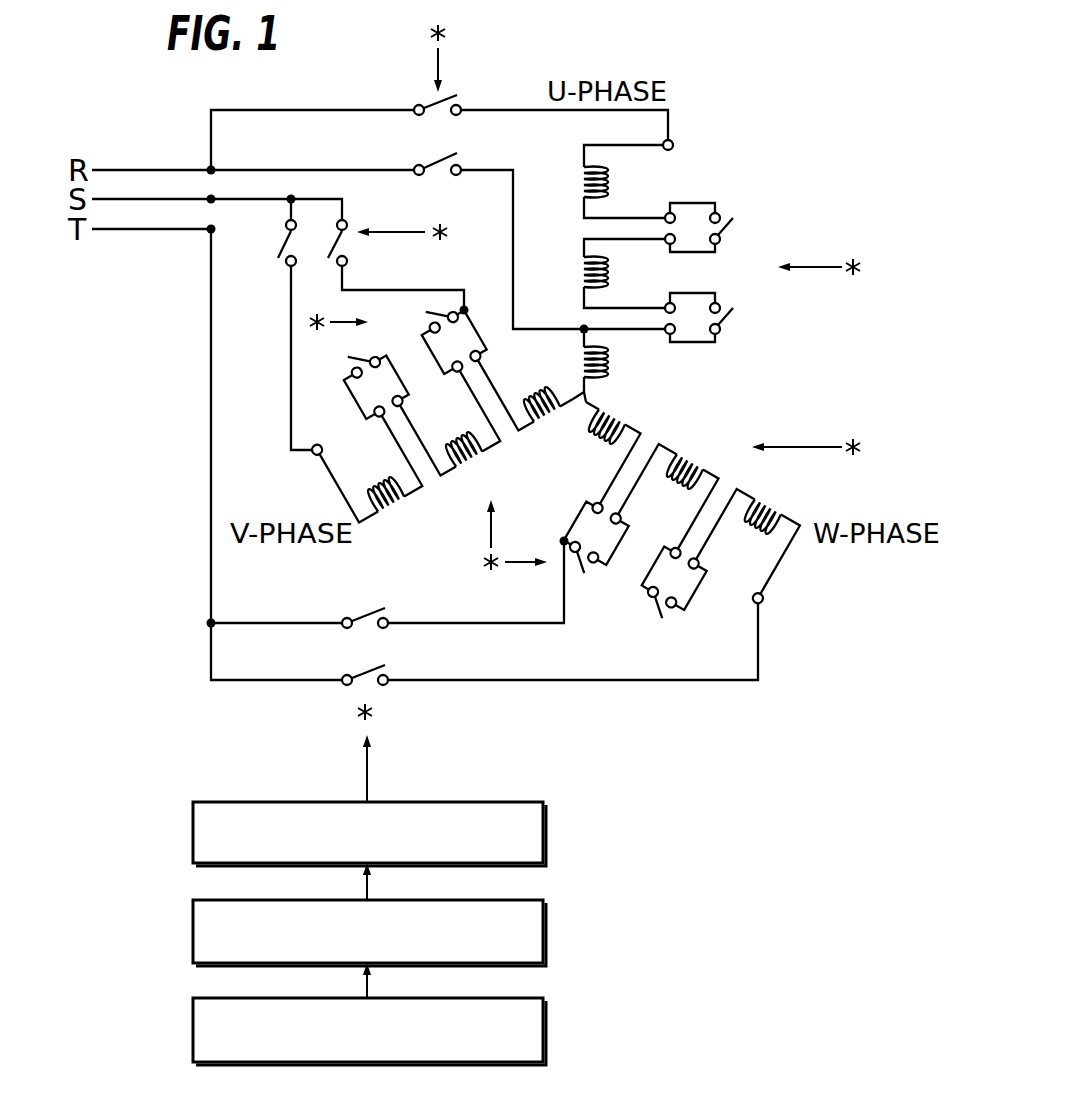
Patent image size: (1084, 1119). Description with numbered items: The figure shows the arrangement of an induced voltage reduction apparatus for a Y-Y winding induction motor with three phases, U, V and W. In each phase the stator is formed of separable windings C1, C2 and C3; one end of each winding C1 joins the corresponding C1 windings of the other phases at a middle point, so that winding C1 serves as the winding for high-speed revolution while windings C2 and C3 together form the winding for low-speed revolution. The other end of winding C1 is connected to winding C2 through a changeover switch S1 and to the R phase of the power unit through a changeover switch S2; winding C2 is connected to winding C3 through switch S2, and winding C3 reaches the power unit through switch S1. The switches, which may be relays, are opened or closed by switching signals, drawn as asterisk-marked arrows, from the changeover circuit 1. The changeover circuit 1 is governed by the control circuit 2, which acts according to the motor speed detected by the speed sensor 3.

The changeover circuit 1 is at (369, 834).
The control circuit 2 is at (369, 933).
The speed sensor 3 is at (369, 1031).
The changeover switch S1 is at (505, 379).
The changeover switch S2 is at (380, 380).
The winding C1 is at (591, 398).
The winding C2 is at (590, 377).
The winding C3 is at (593, 352).